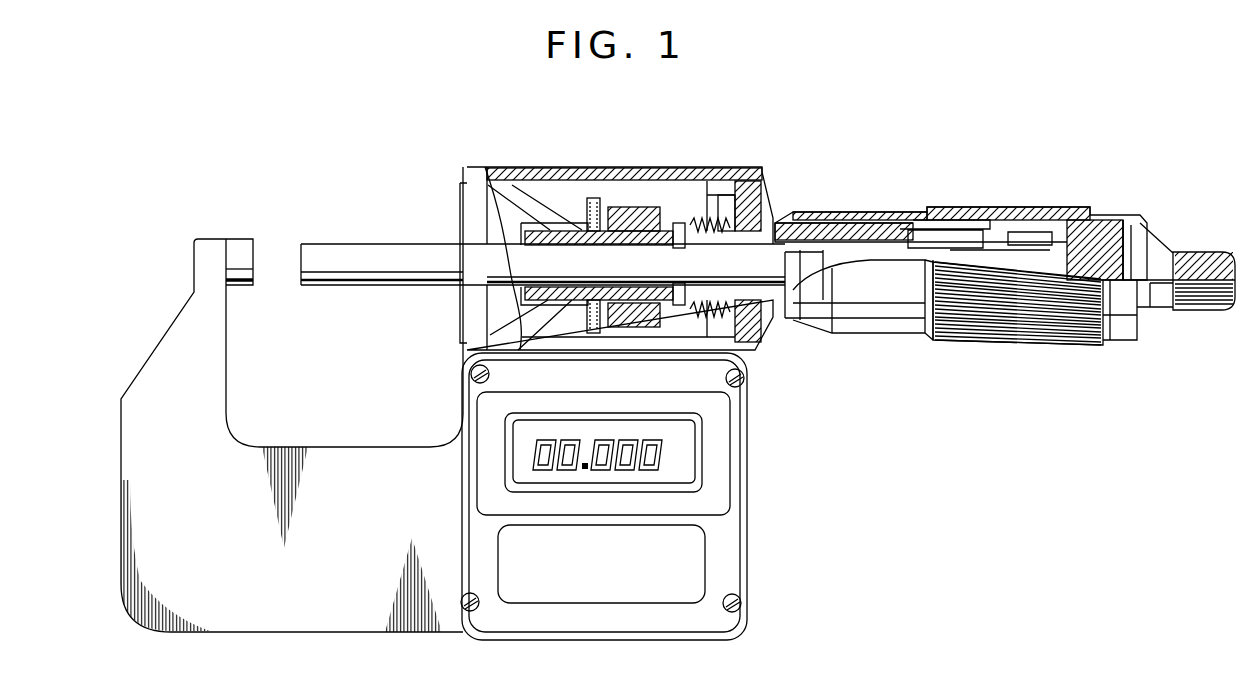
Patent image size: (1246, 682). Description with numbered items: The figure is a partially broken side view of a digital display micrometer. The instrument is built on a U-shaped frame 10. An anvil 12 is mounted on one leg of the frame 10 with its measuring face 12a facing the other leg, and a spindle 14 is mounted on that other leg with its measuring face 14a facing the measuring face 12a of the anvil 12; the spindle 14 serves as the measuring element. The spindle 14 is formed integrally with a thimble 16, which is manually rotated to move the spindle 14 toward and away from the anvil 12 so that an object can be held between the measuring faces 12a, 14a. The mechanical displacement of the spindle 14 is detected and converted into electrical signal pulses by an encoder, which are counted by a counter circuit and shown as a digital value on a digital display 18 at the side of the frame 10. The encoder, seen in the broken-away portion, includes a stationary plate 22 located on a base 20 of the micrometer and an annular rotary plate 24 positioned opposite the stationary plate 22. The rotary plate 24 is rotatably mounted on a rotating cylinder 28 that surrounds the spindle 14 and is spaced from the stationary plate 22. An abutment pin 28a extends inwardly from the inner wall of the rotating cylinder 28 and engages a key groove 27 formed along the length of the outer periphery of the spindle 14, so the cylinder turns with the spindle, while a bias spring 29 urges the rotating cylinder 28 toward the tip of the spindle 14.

The U-shaped frame 10 is at (182, 309).
The anvil 12 is at (240, 287).
The measuring face 12a is at (253, 253).
The spindle 14 is at (381, 285).
The measuring face 14a is at (299, 285).
The thimble 16 is at (990, 345).
The digital display 18 is at (688, 430).
The base 20 is at (503, 188).
The stationary plate 22 is at (602, 202).
The rotary plate 24 is at (613, 205).
The key groove 27 is at (573, 243).
The rotating cylinder 28 is at (650, 225).
The abutment pin 28a is at (686, 248).
The bias spring 29 is at (722, 218).